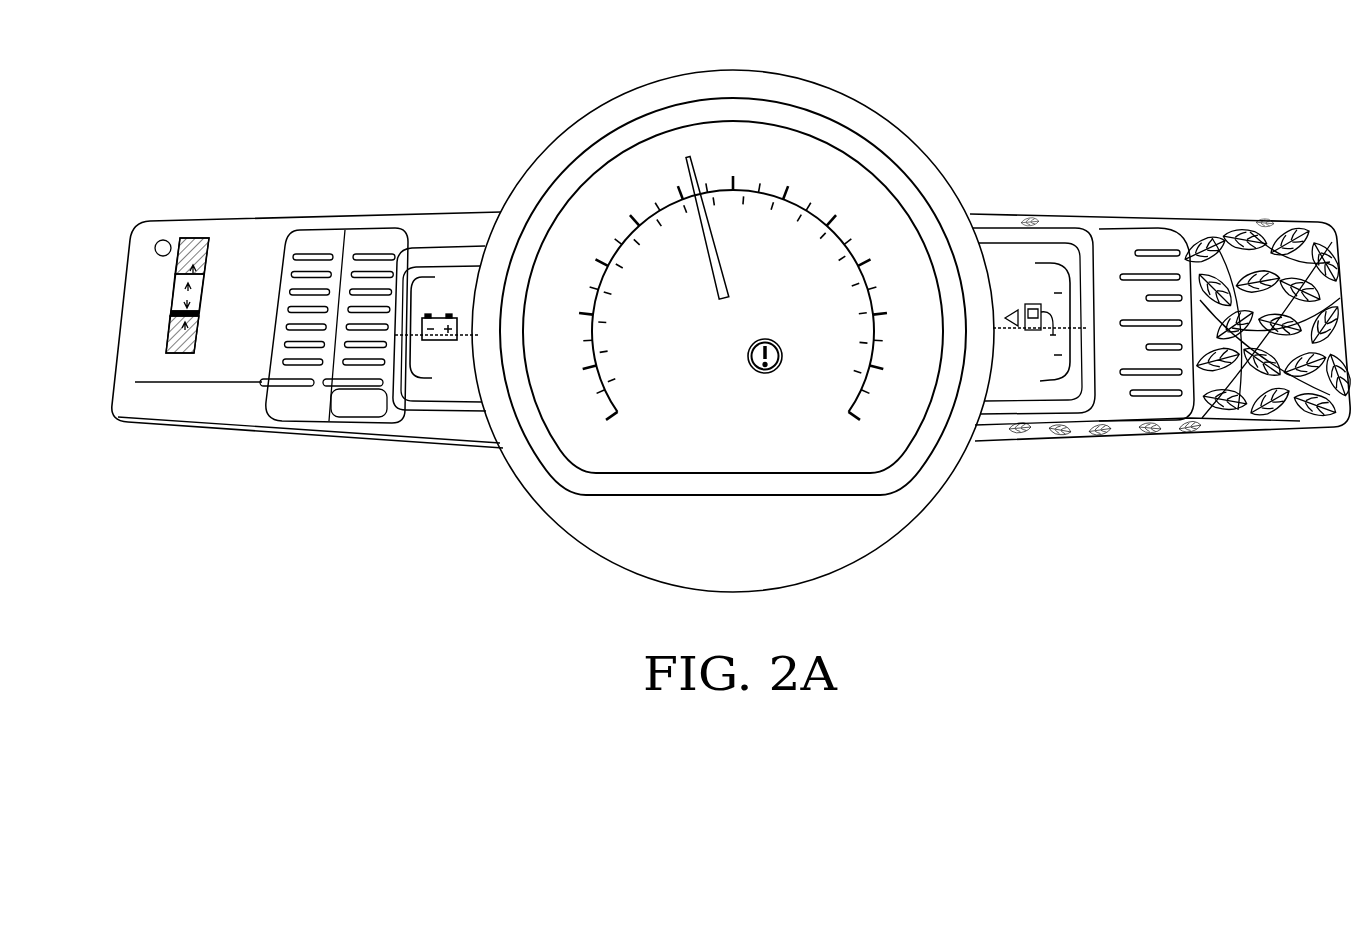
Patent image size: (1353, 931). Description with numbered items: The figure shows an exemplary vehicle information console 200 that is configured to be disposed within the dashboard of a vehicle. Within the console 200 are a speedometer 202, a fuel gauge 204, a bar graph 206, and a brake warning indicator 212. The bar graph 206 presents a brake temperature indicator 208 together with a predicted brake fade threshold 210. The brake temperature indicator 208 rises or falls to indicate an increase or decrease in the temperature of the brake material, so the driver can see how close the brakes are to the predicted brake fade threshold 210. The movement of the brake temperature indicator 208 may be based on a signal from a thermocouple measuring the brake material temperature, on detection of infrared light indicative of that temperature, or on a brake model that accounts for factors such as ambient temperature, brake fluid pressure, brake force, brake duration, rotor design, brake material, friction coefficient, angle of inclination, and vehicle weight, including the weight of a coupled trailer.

The vehicle information console 200 is at (1031, 80).
The speedometer 202 is at (808, 131).
The fuel gauge 204 is at (1045, 418).
The bar graph 206 is at (173, 308).
The brake temperature indicator 208 is at (176, 305).
The predicted brake fade threshold 210 is at (178, 280).
The brake warning indicator 212 is at (765, 375).